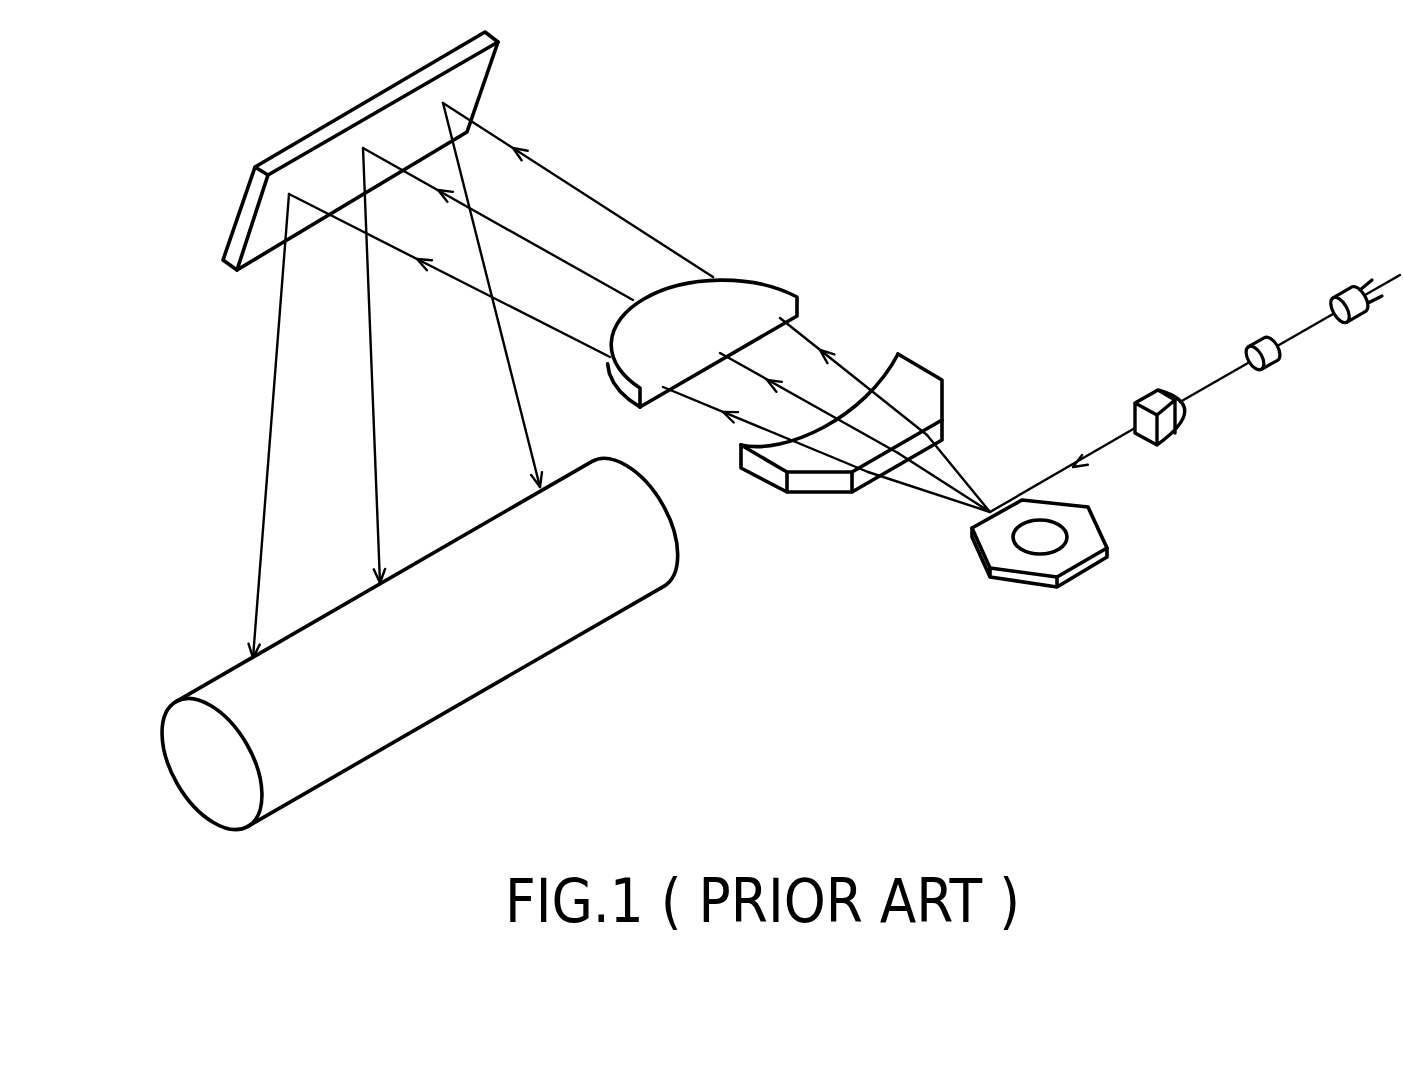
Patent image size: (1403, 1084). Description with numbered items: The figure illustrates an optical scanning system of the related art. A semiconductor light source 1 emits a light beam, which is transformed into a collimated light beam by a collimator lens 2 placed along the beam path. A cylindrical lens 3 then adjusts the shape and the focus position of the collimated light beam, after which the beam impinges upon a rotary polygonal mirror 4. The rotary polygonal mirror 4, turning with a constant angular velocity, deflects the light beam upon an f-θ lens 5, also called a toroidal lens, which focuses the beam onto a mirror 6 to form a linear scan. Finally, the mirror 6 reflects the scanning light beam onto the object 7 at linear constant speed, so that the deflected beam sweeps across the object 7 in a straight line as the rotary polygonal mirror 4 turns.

The semiconductor light source 1 is at (1360, 322).
The collimator lens 2 is at (1273, 370).
The cylindrical lens 3 is at (1165, 430).
The rotary polygonal mirror 4 is at (1088, 567).
The f-θ lens 5 is at (773, 221).
The mirror 6 is at (348, 118).
The object 7 is at (540, 623).